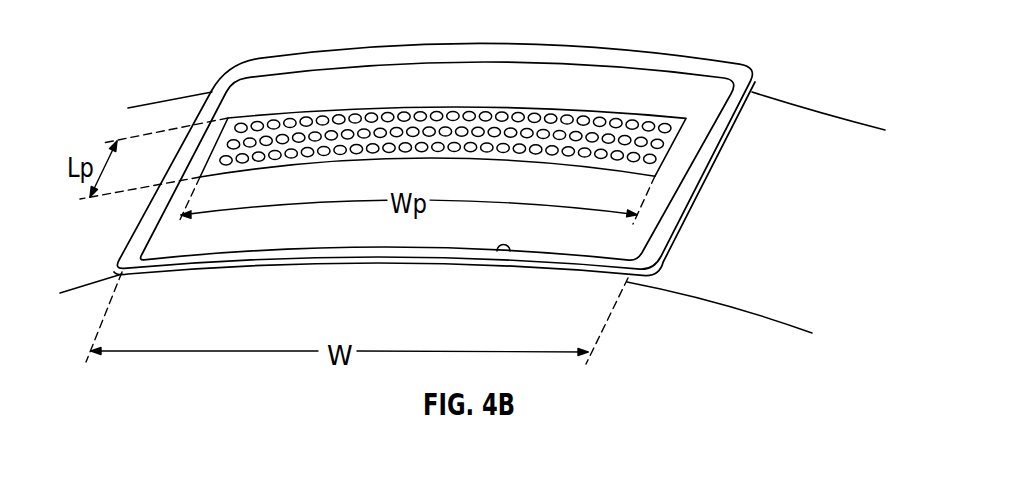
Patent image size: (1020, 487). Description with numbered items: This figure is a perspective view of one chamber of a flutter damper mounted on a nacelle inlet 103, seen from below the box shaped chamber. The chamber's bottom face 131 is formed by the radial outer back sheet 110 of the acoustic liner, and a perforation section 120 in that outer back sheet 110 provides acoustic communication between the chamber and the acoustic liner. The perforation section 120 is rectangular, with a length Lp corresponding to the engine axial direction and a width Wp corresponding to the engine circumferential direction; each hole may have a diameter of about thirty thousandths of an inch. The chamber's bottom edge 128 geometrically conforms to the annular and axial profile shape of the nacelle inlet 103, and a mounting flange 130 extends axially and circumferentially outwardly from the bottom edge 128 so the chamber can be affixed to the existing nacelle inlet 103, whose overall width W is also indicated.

The nacelle inlet 103 is at (753, 310).
The outer back sheet 110 is at (740, 74).
The perforation section 120 is at (577, 112).
The bottom edge 128 is at (508, 257).
The mounting flange 130 is at (333, 248).
The bottom face 131 is at (220, 268).